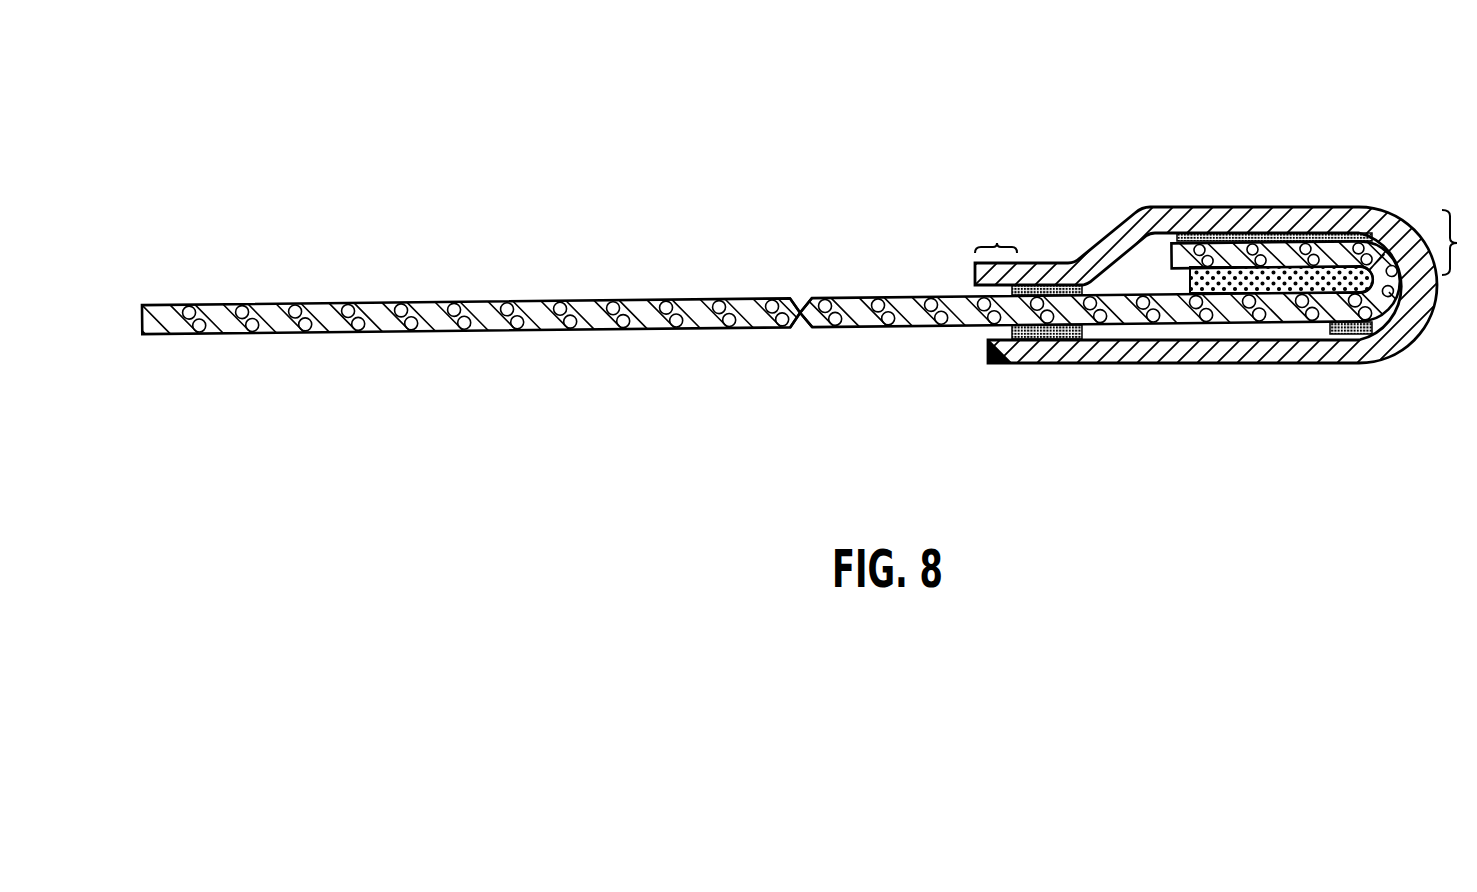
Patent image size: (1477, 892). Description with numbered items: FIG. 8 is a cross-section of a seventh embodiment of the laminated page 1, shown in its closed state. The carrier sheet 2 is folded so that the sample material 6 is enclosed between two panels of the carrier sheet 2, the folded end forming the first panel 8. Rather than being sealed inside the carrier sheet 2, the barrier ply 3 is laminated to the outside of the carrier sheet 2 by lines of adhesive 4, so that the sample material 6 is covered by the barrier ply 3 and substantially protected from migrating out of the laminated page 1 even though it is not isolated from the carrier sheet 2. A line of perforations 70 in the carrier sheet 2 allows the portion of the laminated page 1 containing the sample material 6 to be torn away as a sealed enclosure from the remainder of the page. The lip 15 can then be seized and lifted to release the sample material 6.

The laminated page 1 is at (1298, 125).
The carrier sheet 2 is at (906, 312).
The barrier ply 3 is at (1243, 363).
The laminating adhesive 4 is at (1042, 339).
The sample material 6 is at (1293, 280).
The first panel 8 is at (1459, 242).
The lip 15 is at (996, 226).
The line of perforations 70 is at (807, 335).